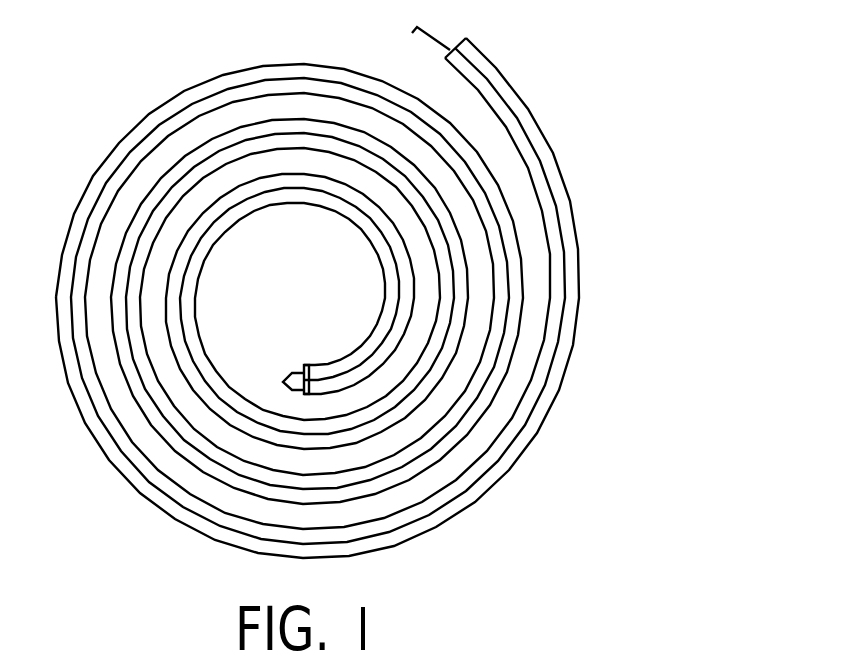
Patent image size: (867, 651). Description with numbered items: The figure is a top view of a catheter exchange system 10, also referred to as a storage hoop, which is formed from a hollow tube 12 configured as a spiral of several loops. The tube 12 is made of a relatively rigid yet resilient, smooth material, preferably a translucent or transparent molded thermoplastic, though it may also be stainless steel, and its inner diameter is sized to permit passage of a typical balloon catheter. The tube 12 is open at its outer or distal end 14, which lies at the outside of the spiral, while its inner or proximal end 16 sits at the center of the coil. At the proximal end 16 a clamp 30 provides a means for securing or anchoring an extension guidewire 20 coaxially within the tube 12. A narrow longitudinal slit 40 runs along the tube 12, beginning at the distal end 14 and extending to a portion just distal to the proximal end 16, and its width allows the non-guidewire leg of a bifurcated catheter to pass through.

The catheter exchange system 10 is at (363, 279).
The tube 12 is at (363, 298).
The distal end 14 is at (470, 33).
The proximal end 16 is at (318, 360).
The extension guidewire 20 is at (480, 24).
The clamp 30 is at (293, 370).
The longitudinal slit 40 is at (140, 478).